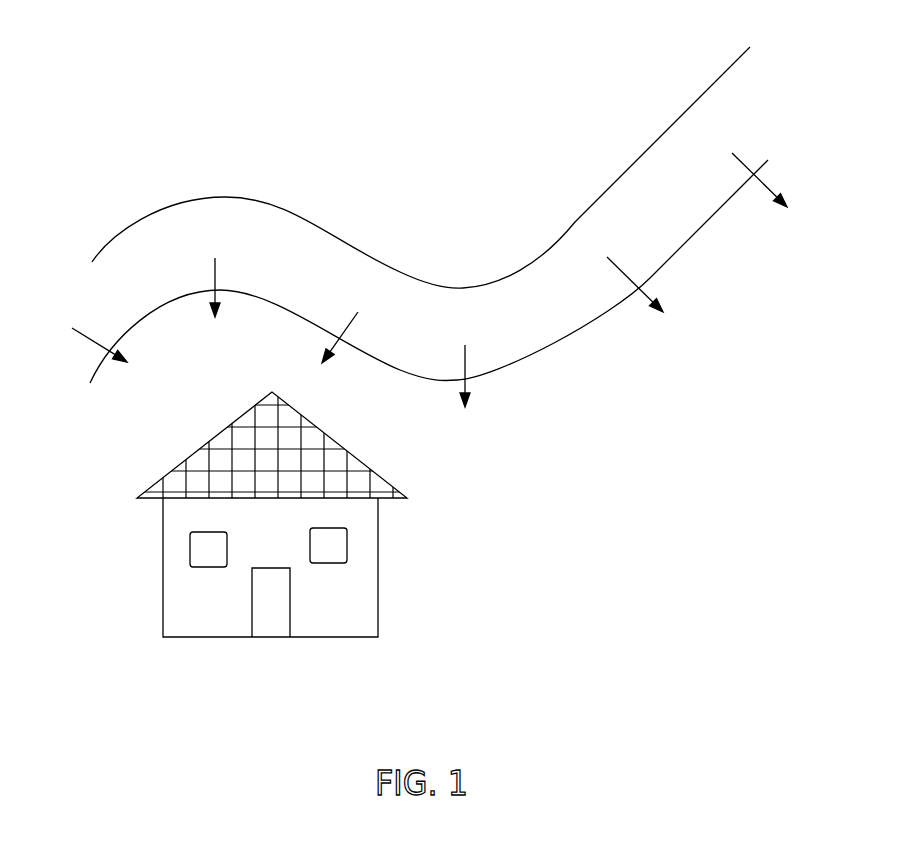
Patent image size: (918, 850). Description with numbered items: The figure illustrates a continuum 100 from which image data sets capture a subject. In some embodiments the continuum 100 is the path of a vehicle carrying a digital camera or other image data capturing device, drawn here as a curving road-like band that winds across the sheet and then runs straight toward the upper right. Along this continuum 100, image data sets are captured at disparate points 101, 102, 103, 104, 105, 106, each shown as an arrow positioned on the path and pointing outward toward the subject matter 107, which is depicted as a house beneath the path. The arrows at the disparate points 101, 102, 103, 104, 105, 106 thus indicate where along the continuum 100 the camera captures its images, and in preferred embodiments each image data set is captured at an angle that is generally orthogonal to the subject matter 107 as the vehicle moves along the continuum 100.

The continuum 100 is at (487, 287).
The disparate point 101 is at (76, 335).
The disparate point 102 is at (215, 273).
The disparate point 103 is at (353, 322).
The disparate point 104 is at (465, 361).
The disparate point 105 is at (621, 271).
The disparate point 106 is at (741, 166).
The subject matter 107 is at (282, 508).